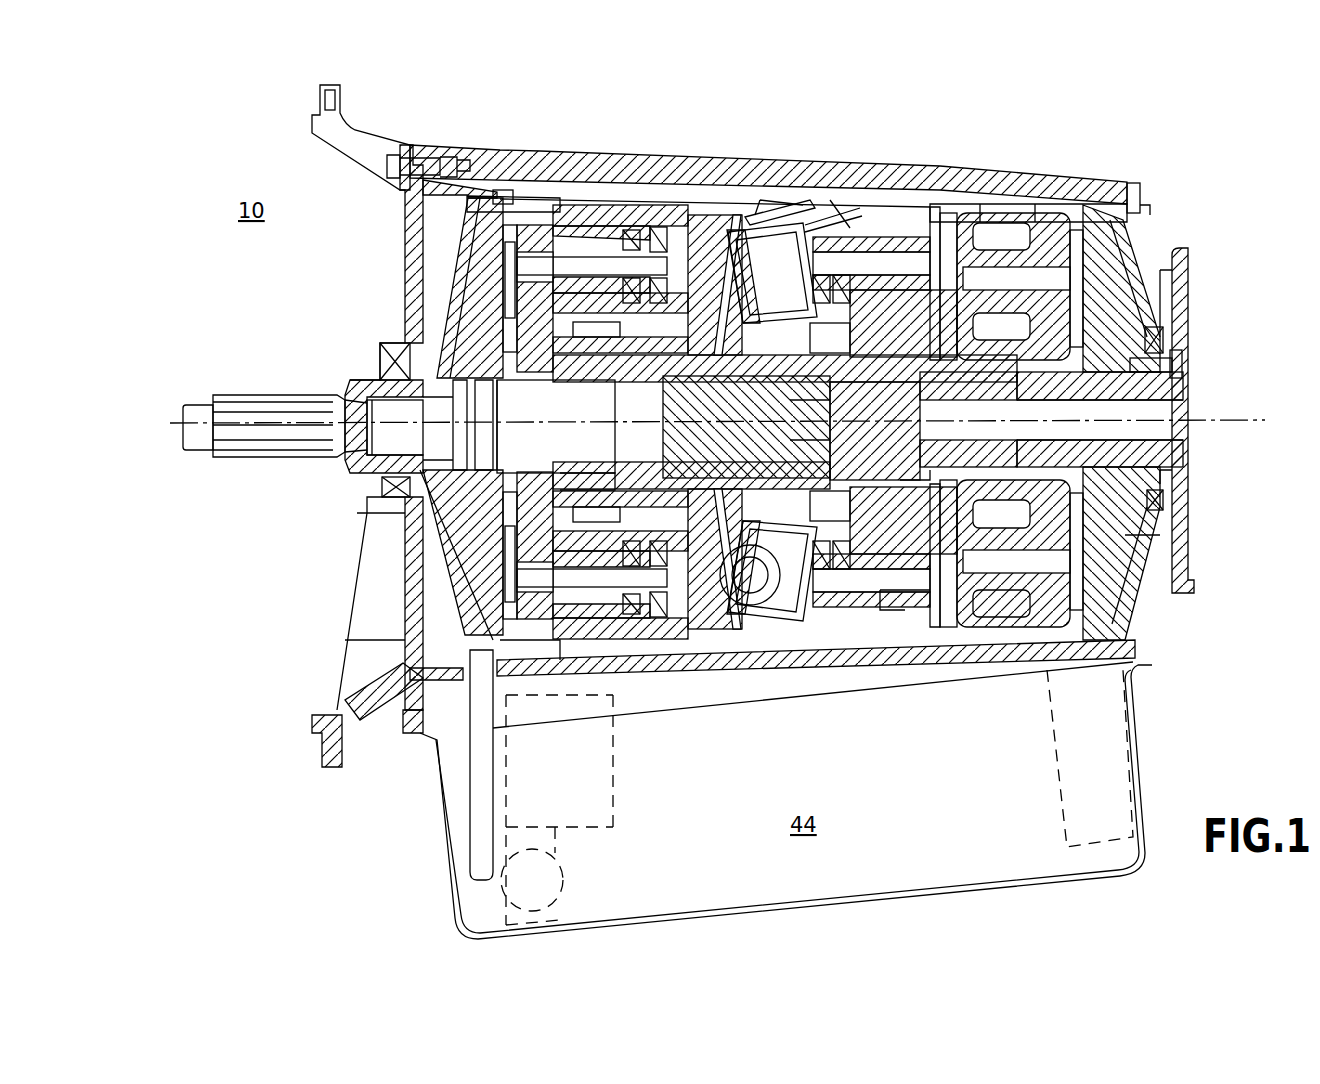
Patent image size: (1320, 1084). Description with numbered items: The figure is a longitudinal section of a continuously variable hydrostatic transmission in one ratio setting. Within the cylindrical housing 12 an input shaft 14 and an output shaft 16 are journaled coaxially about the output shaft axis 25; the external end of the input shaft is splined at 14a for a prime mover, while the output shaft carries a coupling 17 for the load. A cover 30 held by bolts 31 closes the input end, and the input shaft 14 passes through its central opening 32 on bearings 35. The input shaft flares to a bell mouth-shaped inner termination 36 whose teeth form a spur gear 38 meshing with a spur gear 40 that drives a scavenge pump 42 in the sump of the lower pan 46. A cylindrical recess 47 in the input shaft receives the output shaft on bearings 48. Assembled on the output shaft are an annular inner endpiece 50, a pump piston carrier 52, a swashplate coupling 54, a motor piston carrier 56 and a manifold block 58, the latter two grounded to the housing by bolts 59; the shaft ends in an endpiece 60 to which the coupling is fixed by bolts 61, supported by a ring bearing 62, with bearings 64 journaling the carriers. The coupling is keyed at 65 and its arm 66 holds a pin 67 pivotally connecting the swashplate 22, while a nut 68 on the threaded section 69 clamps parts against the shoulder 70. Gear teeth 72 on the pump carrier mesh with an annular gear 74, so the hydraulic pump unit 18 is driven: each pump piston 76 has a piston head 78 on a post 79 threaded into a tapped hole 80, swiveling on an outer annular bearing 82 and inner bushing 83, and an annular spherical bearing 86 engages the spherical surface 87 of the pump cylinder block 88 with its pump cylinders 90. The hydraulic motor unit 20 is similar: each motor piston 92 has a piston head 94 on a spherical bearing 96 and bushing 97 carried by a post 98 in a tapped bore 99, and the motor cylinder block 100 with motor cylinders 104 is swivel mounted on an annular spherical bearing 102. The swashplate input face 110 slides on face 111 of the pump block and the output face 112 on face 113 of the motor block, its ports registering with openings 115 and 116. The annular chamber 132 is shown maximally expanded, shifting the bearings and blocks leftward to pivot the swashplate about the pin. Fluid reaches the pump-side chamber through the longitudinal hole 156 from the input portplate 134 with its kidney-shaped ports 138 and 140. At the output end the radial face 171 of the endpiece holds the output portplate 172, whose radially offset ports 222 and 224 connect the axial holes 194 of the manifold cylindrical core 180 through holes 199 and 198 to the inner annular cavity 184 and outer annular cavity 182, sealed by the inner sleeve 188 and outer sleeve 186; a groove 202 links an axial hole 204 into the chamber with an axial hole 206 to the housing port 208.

The housing 12 is at (700, 168).
The input shaft 14 is at (330, 392).
The splined end 14a is at (248, 455).
The output shaft 16 is at (930, 374).
The coupling 17 is at (1188, 300).
The hydraulic pump unit 18 is at (655, 185).
The hydraulic motor unit 20 is at (778, 192).
The swashplate 22 is at (720, 210).
The output shaft axis 25 is at (1240, 420).
The cover 30 is at (345, 690).
The bolt 31 is at (418, 155).
The central opening 32 is at (365, 520).
The bearings 35 is at (365, 495).
The inner termination 36 is at (455, 312).
The spur gear 38 is at (460, 190).
The spur gear 40 is at (480, 815).
The scavenge pump 42 is at (617, 805).
The lower pan 46 is at (880, 893).
The cylindrical recess 47 is at (400, 433).
The bearings 48 is at (378, 485).
The annular inner endpiece 50 is at (480, 250).
The pump piston carrier 52 is at (545, 378).
The swashplate coupling 54 is at (672, 400).
The motor piston carrier 56 is at (872, 342).
The manifold block 58 is at (912, 300).
The bolt 59 is at (1135, 183).
The endpiece 60 is at (1100, 262).
The bolt 61 is at (1188, 365).
The ring bearing 62 is at (1165, 500).
The bearings 64 is at (750, 330).
The key 65 is at (790, 410).
The radially extending arm 66 is at (800, 452).
The pin 67 is at (790, 620).
The nut 68 is at (520, 432).
The threaded section 69 is at (488, 447).
The shoulder 70 is at (720, 330).
The gear teeth 72 is at (565, 203).
The annular gear 74 is at (510, 192).
The pump piston 76 is at (597, 195).
The piston head 78 is at (620, 658).
The post 79 is at (545, 662).
The tapped hole 80 is at (470, 600).
The outer annular bearing 82 is at (650, 655).
The inner bushing 83 is at (680, 652).
The annular spherical bearing 86 is at (617, 498).
The spherical surface 87 is at (650, 520).
The pump cylinder block 88 is at (640, 205).
The pump cylinder 90 is at (592, 648).
The motor piston 92 is at (900, 235).
The piston head 94 is at (860, 235).
The spherical bearing 96 is at (815, 236).
The bushing 97 is at (812, 242).
The post 98 is at (935, 205).
The tapped bore 99 is at (985, 212).
The motor cylinder block 100 is at (880, 652).
The annular spherical bearing 102 is at (900, 470).
The motor cylinder 104 is at (745, 245).
The input face 110 is at (715, 650).
The face 111 is at (745, 645).
The output face 112 is at (823, 640).
The face 113 is at (805, 650).
The openings 115 is at (725, 215).
The openings 116 is at (865, 650).
The annular chamber 132 is at (890, 588).
The input portplate 134 is at (490, 553).
The kidney-shaped port 138 is at (492, 522).
The kidney-shaped port 140 is at (510, 280).
The longitudinal hole 156 is at (570, 478).
The radial face 171 is at (1180, 280).
The output portplate 172 is at (1165, 340).
The cylindrical core 180 is at (1145, 572).
The outer annular cavity 182 is at (1001, 235).
The inner annular cavity 184 is at (925, 636).
The outer sleeve 186 is at (1075, 232).
The inner sleeve 188 is at (1055, 445).
The axial hole 194 is at (1130, 290).
The axial hole 198 is at (1040, 212).
The axial hole 199 is at (1172, 478).
The radially elongated groove 202 is at (1001, 514).
The axial hole 204 is at (965, 480).
The axial hole 206 is at (1030, 640).
The port 208 is at (1085, 662).
The kidney-shaped port 222 is at (1120, 537).
The kidney-shaped port 224 is at (1152, 250).